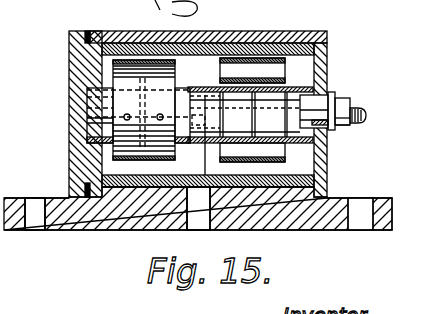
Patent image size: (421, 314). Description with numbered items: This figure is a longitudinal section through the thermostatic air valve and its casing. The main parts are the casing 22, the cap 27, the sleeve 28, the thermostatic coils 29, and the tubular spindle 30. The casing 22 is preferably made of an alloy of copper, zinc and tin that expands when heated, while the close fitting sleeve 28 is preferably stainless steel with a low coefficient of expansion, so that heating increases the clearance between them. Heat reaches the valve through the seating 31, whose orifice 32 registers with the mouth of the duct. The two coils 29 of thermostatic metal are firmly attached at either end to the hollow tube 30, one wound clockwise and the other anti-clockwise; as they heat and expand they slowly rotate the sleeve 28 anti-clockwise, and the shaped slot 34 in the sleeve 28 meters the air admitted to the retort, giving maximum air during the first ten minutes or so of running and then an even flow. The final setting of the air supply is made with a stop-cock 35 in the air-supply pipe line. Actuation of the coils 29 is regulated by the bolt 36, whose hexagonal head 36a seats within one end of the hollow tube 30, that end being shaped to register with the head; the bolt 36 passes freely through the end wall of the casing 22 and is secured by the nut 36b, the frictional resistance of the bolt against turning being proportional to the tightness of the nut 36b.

The casing 22 is at (283, 31).
The cap 27 is at (69, 68).
The sleeve 28 is at (316, 57).
The thermostatic coils 29 is at (115, 73).
The tubular spindle 30 is at (300, 125).
The seating 31 is at (107, 228).
The orifice 32 is at (203, 231).
The slot 34 is at (131, 230).
The stop-cock 35 is at (343, 110).
The bolt 36 is at (364, 112).
The hexagonal head 36a is at (347, 121).
The nut 36b is at (370, 99).